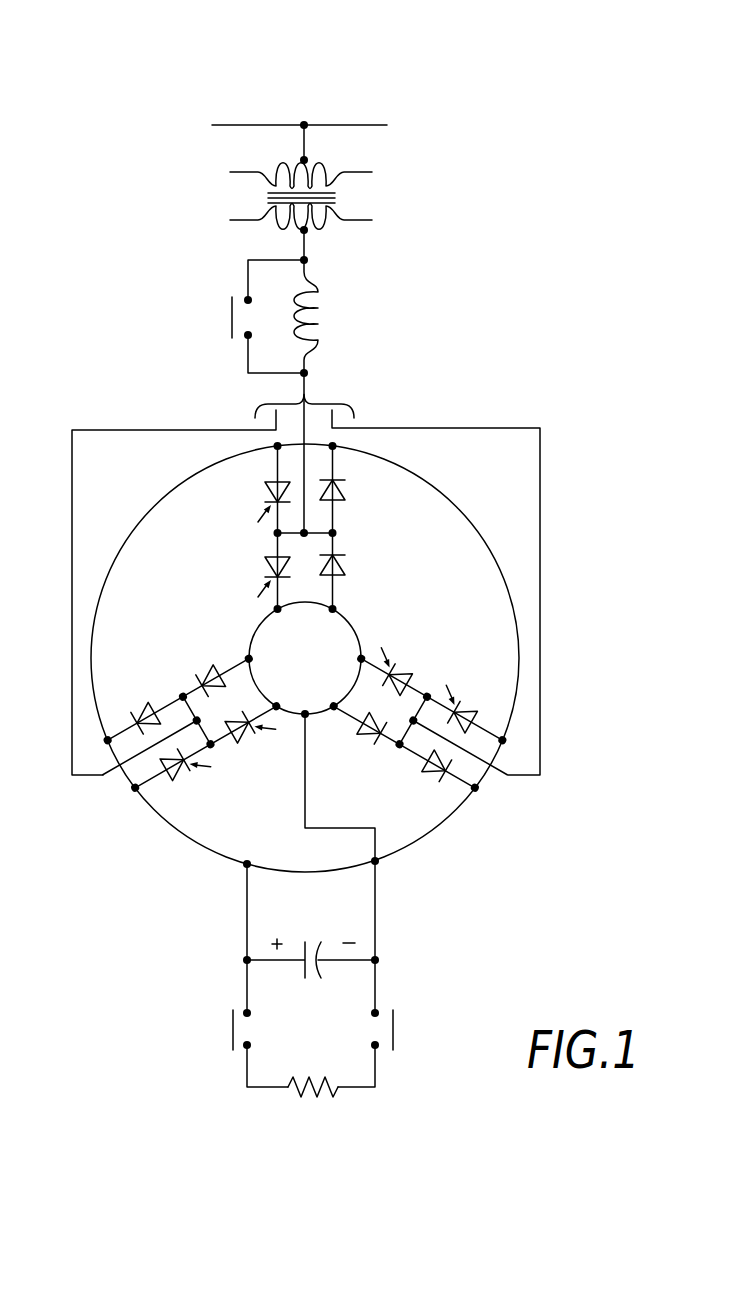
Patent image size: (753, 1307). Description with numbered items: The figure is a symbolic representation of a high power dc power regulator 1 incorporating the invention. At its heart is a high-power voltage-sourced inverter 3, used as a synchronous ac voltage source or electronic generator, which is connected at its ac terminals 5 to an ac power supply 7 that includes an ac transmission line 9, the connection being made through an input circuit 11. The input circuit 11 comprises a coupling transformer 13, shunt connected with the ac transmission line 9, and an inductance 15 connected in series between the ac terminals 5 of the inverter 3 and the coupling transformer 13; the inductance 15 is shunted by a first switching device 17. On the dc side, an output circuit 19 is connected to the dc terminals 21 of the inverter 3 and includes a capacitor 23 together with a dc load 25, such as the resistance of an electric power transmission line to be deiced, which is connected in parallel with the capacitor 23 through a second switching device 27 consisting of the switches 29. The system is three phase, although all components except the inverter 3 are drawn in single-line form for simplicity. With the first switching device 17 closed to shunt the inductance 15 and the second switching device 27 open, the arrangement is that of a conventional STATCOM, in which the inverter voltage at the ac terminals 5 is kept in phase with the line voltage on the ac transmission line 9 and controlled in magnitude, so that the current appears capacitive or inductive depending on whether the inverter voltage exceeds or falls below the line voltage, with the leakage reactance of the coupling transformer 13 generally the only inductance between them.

The dc power regulator 1 is at (467, 363).
The voltage-sourced inverter 3 is at (130, 822).
The ac terminals 5 is at (306, 533).
The ac power supply 7 is at (315, 100).
The ac transmission line 9 is at (350, 125).
The input circuit 11 is at (410, 300).
The coupling transformer 13 is at (345, 202).
The inductance 15 is at (318, 291).
The first switching device 17 is at (230, 310).
The output circuit 19 is at (165, 963).
The dc terminals 21 is at (249, 860).
The capacitor 23 is at (304, 977).
The dc load 25 is at (323, 1096).
The second switching device 27 is at (422, 975).
The switches 29 is at (232, 1033).